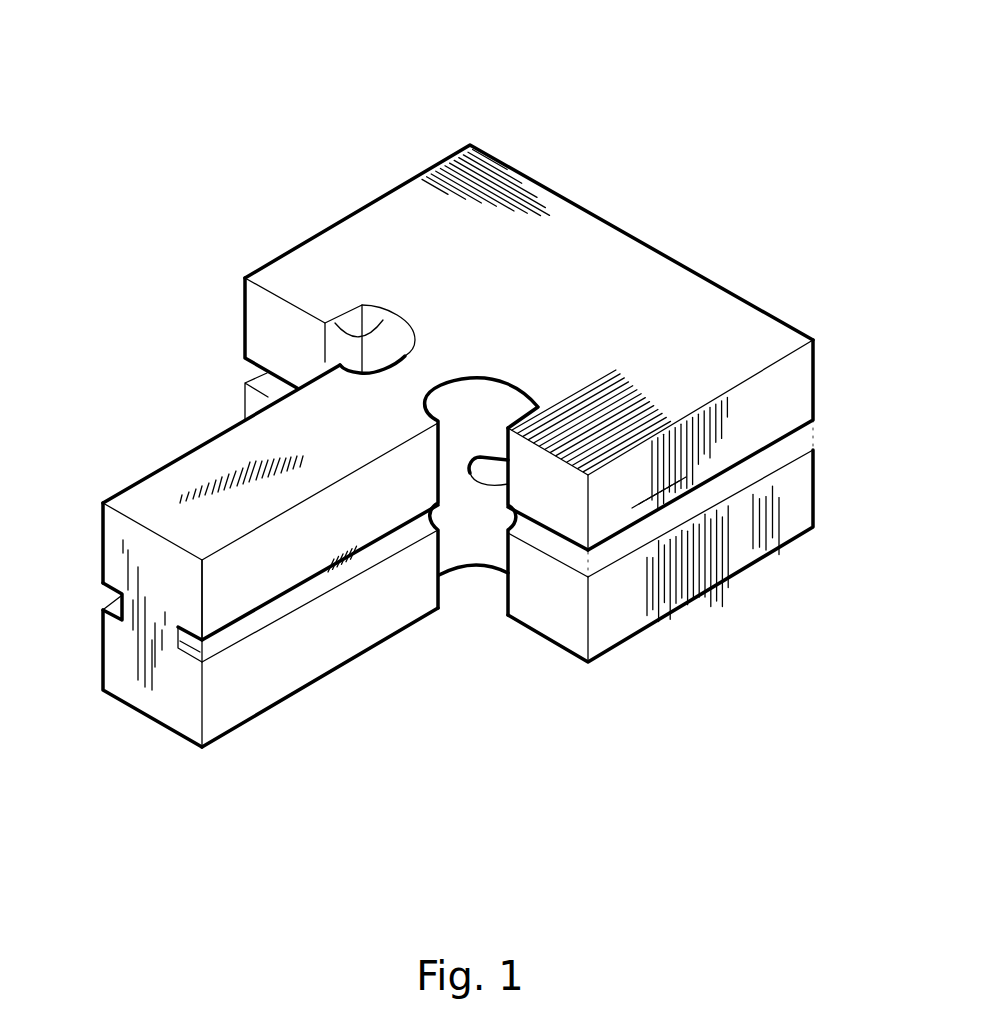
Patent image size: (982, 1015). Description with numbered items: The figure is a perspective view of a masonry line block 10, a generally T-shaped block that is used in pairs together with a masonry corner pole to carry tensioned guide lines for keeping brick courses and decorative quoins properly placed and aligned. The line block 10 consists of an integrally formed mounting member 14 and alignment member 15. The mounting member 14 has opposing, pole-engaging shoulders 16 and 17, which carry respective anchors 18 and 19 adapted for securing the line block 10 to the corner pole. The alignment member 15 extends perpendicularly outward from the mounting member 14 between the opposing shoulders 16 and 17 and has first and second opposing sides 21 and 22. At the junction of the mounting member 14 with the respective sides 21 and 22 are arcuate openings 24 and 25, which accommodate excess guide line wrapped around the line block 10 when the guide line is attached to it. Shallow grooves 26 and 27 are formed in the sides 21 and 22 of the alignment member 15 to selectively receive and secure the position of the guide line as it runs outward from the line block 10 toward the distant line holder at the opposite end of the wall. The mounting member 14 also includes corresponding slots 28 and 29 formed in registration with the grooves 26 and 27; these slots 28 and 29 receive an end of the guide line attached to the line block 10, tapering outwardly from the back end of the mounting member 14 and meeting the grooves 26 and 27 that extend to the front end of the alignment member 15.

The masonry line block 10 is at (186, 93).
The mounting member 14 is at (633, 275).
The alignment member 15 is at (118, 528).
The pole-engaging shoulder 16 is at (385, 223).
The pole-engaging shoulder 17 is at (778, 338).
The anchor 18 is at (264, 308).
The anchor 19 is at (560, 617).
The first side of alignment member 21 is at (173, 460).
The second side of alignment member 22 is at (305, 645).
The arcuate opening 24 is at (340, 327).
The arcuate opening 25 is at (478, 560).
The shallow groove 26 is at (112, 600).
The shallow groove 27 is at (197, 642).
The slot 28 is at (250, 365).
The slot 29 is at (788, 450).